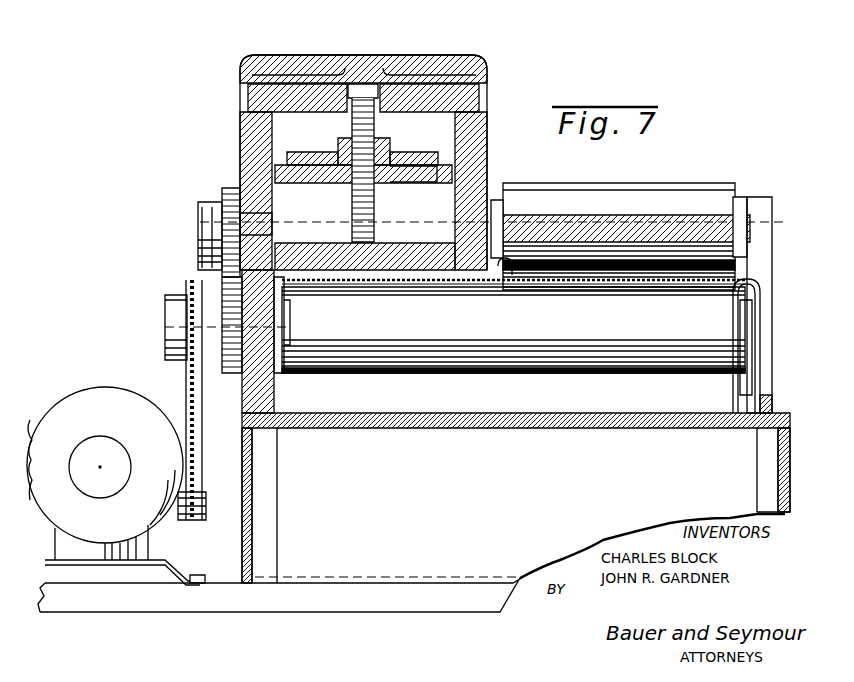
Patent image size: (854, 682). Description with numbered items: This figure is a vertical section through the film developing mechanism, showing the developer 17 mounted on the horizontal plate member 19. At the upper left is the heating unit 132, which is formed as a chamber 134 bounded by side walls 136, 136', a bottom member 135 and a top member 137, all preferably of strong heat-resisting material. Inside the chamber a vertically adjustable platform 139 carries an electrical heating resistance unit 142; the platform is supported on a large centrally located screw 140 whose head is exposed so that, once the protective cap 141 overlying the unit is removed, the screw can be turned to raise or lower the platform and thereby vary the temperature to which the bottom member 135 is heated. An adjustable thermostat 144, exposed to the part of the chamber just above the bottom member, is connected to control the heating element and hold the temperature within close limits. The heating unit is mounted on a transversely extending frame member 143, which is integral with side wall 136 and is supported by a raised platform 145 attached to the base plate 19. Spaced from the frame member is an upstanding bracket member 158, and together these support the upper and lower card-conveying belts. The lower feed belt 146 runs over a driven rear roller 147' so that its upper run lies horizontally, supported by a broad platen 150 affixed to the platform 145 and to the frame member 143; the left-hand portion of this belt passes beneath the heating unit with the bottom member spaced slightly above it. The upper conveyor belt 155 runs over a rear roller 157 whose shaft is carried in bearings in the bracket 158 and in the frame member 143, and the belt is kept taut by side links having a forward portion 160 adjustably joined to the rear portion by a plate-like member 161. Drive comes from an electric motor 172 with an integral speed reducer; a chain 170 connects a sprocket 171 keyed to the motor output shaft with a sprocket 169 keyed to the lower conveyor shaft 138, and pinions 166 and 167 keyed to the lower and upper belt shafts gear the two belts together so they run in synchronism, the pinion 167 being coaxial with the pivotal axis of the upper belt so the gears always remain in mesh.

The developer 17 is at (730, 167).
The horizontal plate member 19 is at (332, 605).
The heating unit 132 is at (494, 96).
The chamber 134 is at (290, 186).
The bottom member 135 is at (293, 244).
The side wall 136 is at (234, 191).
The side wall 136' is at (494, 191).
The top member 137 is at (411, 111).
The shaft 138 is at (288, 326).
The platform 139 is at (392, 184).
The screw 140 is at (378, 214).
The protective cap 141 is at (370, 56).
The electrical heating resistance unit 142 is at (325, 151).
The frame member 143 is at (277, 402).
The adjustable thermostat 144 is at (260, 222).
The raised platform 145 is at (470, 413).
The lower card-conveying belt 146 is at (510, 276).
The driven rear roller 147' is at (513, 341).
The supporting platen 150 is at (660, 272).
The upper conveyor belt 155 is at (634, 284).
The rear roller 157 is at (595, 192).
The bracket member 158 is at (772, 313).
The forward link portion 160 is at (500, 210).
The plate-like member 161 is at (685, 214).
The pinion 166 is at (230, 376).
The pinion 167 is at (215, 216).
The sprocket 169 is at (170, 322).
The chain 170 is at (186, 385).
The sprocket 171 is at (206, 500).
The electric motor 172 is at (52, 403).